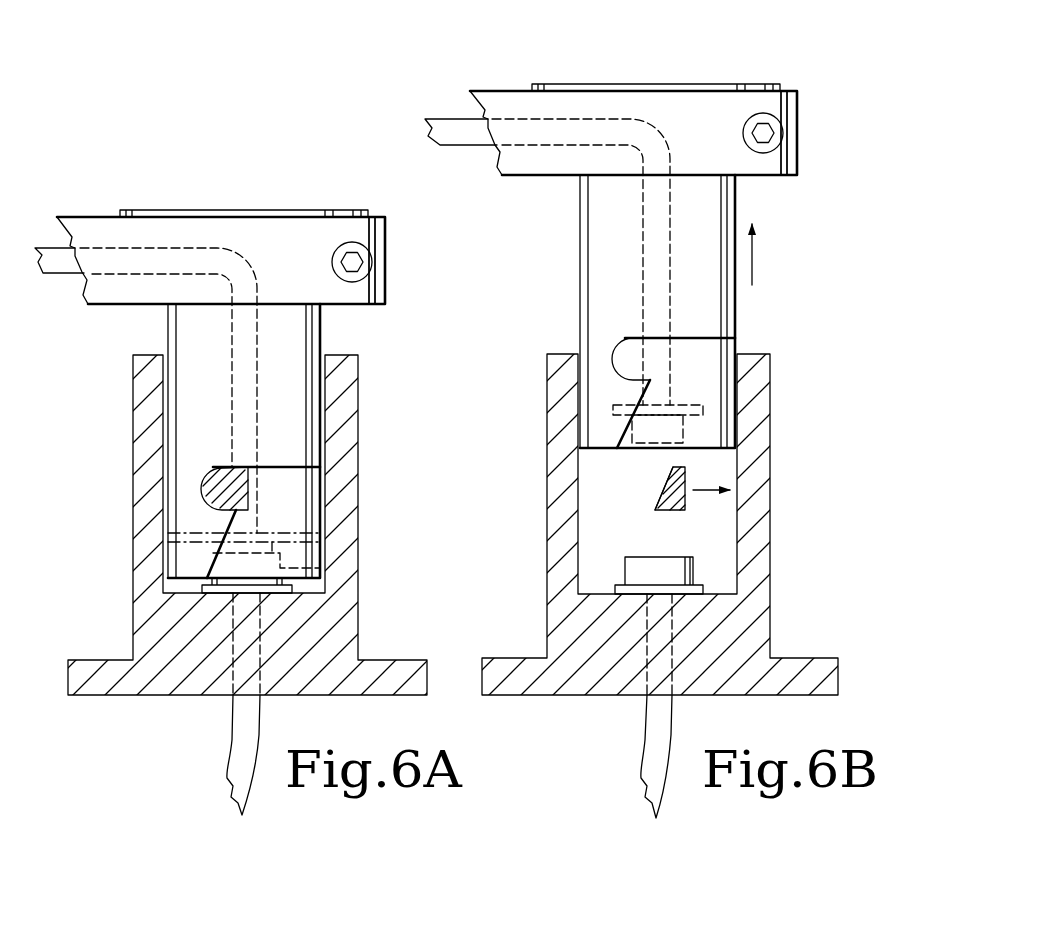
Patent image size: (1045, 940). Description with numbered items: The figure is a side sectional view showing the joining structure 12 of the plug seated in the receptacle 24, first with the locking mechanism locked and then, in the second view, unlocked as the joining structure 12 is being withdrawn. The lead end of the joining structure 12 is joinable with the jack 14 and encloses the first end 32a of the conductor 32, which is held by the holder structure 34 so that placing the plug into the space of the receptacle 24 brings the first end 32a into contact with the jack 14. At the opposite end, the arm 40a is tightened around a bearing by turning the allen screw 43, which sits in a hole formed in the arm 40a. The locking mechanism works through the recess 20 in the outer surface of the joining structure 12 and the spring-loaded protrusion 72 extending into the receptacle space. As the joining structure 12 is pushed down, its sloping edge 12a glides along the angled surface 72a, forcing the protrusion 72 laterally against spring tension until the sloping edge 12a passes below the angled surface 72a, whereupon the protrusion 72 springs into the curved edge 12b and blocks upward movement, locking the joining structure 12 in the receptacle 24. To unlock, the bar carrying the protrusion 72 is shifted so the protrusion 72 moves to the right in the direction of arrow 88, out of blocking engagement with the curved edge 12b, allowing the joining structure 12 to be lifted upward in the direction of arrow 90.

In FIG. 6A, the joining structure 12 is at (360, 330).
In FIG. 6B, the joining structure 12 is at (772, 202).
In FIG. 6A, the sloping edge 12a is at (305, 530).
In FIG. 6B, the sloping edge 12a is at (630, 448).
In FIG. 6A, the curved edge 12b is at (213, 467).
In FIG. 6B, the curved edge 12b is at (640, 310).
In FIG. 6A, the jack 14 is at (325, 588).
In FIG. 6B, the jack 14 is at (693, 568).
In FIG. 6A, the recess 20 is at (293, 483).
In FIG. 6B, the recess 20 is at (710, 352).
In FIG. 6A, the receptacle 24 is at (122, 533).
In FIG. 6B, the receptacle 24 is at (778, 520).
In FIG. 6A, the conductor 32 is at (65, 275).
In FIG. 6B, the conductor 32 is at (452, 118).
In FIG. 6A, the first end of conductor 32a is at (322, 556).
In FIG. 6B, the first end of conductor 32a is at (683, 428).
In FIG. 6A, the holder structure 34 is at (307, 533).
In FIG. 6B, the holder structure 34 is at (690, 405).
In FIG. 6A, the arm 40a is at (440, 183).
In FIG. 6B, the arm 40a is at (797, 102).
In FIG. 6A, the allen screw 43 is at (372, 275).
In FIG. 6B, the allen screw 43 is at (783, 148).
In FIG. 6A, the protrusion 72 is at (265, 488).
In FIG. 6B, the protrusion 72 is at (687, 472).
In FIG. 6A, the angled surface 72a is at (218, 467).
In FIG. 6B, the angled surface 72a is at (657, 497).
In FIG. 6B, the arrow 88 is at (704, 490).
In FIG. 6B, the arrow 90 is at (753, 273).